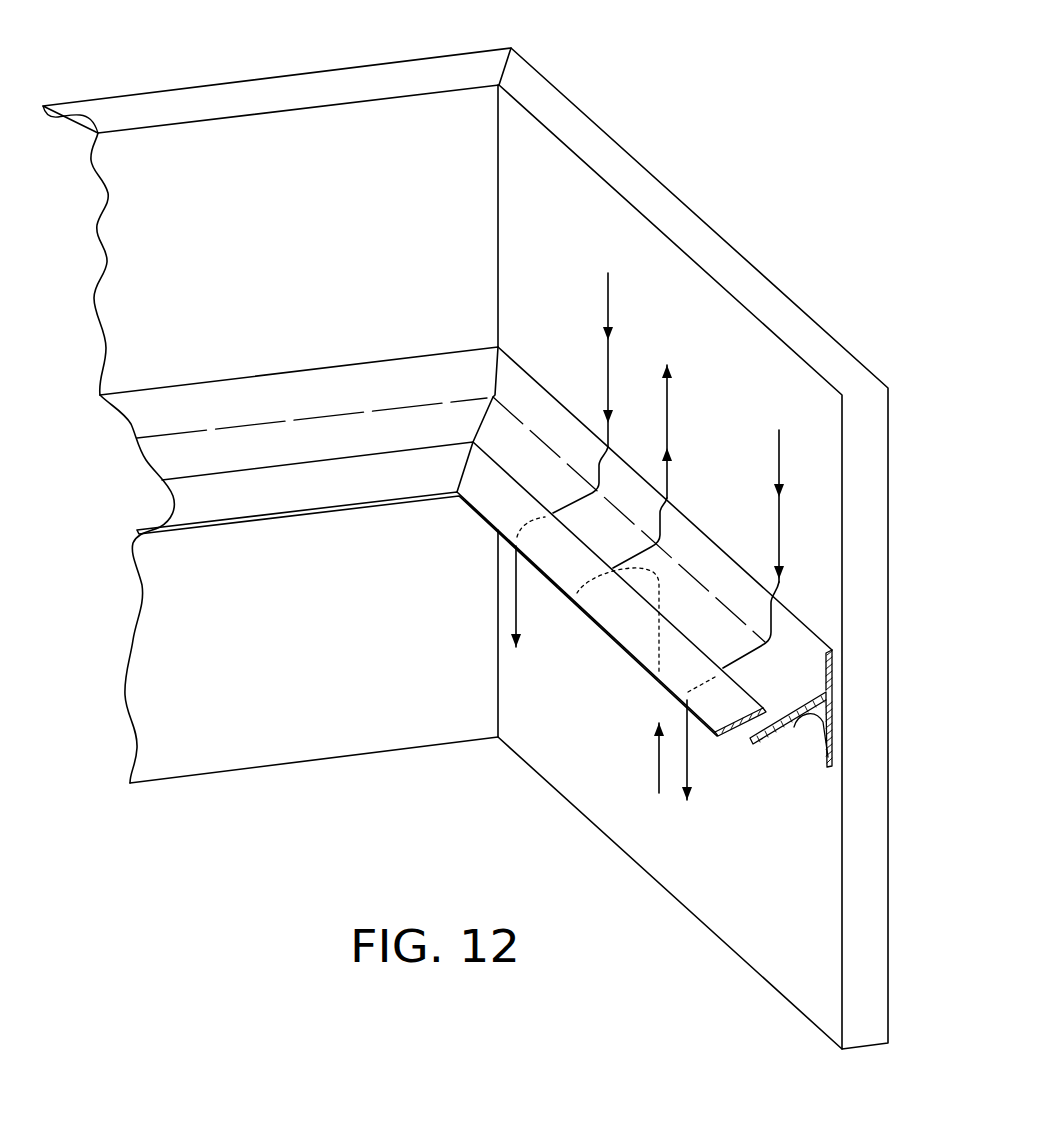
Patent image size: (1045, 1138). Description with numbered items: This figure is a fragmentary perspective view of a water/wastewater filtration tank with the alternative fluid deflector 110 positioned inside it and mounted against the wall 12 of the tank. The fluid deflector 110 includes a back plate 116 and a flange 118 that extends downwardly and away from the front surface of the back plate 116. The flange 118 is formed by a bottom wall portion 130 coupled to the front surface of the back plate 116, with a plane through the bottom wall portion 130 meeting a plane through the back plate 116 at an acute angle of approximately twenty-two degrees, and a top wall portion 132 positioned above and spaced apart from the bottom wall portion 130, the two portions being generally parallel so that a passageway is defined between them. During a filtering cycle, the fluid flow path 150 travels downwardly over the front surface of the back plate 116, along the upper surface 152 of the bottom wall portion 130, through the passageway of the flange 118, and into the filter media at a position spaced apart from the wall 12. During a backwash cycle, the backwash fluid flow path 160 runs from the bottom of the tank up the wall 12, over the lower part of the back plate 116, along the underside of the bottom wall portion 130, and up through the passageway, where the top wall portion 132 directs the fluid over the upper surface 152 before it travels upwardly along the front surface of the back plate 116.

The wall 12 is at (293, 88).
The back plate 116 is at (281, 362).
The upper surface of the bottom flange portion 152 is at (207, 447).
The top wall portion 132 is at (170, 534).
The fluid deflector 110 is at (580, 621).
The fluid flow path 150 is at (607, 372).
The backwash fluid flow path 160 is at (657, 757).
The bottom wall portion 130 is at (794, 727).
The flange 118 is at (774, 748).